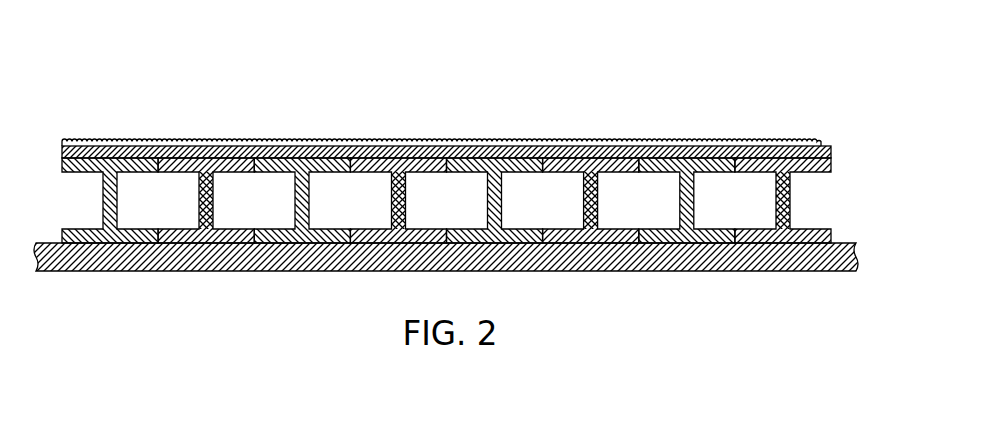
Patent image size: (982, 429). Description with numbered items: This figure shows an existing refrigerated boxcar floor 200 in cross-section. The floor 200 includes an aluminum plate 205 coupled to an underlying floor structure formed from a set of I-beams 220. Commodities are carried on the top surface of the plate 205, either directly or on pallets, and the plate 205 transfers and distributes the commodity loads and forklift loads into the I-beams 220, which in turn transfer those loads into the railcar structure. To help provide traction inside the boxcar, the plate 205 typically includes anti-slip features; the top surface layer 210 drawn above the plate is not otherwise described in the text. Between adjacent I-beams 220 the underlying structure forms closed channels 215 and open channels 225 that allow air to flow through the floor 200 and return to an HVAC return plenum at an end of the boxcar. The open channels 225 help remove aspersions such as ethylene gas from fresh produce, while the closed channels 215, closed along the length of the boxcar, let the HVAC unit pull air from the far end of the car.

The floor 200 is at (608, 62).
The aluminum plate 205 is at (274, 148).
The top skin layer 210 is at (368, 139).
The closed channels 215 is at (733, 196).
The I-beams 220 is at (685, 239).
The open channels 225 is at (623, 202).